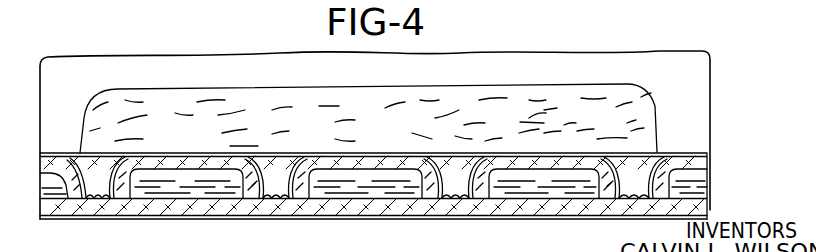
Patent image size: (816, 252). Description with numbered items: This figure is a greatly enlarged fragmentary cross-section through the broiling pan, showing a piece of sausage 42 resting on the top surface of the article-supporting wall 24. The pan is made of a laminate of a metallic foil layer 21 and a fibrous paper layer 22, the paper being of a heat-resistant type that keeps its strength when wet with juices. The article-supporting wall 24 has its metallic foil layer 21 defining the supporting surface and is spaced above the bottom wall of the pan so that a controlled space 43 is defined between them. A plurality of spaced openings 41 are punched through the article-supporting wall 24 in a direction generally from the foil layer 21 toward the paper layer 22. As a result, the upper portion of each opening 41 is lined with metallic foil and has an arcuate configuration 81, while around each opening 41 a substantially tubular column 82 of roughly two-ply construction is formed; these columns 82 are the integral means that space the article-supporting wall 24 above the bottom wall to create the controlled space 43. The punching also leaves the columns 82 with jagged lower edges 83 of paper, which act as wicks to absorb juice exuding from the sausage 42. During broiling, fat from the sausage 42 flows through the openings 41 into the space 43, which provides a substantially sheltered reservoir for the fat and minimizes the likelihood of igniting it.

The metallic foil layer 21 is at (692, 147).
The paper layer 22 is at (334, 203).
The article-supporting wall 24 is at (389, 151).
The openings 41 is at (90, 205).
The sausage 42 is at (172, 97).
The controlled space 43 is at (177, 180).
The arcuate configuration 81 is at (87, 162).
The tubular column 82 is at (238, 190).
The jagged lower edges 83 is at (609, 193).